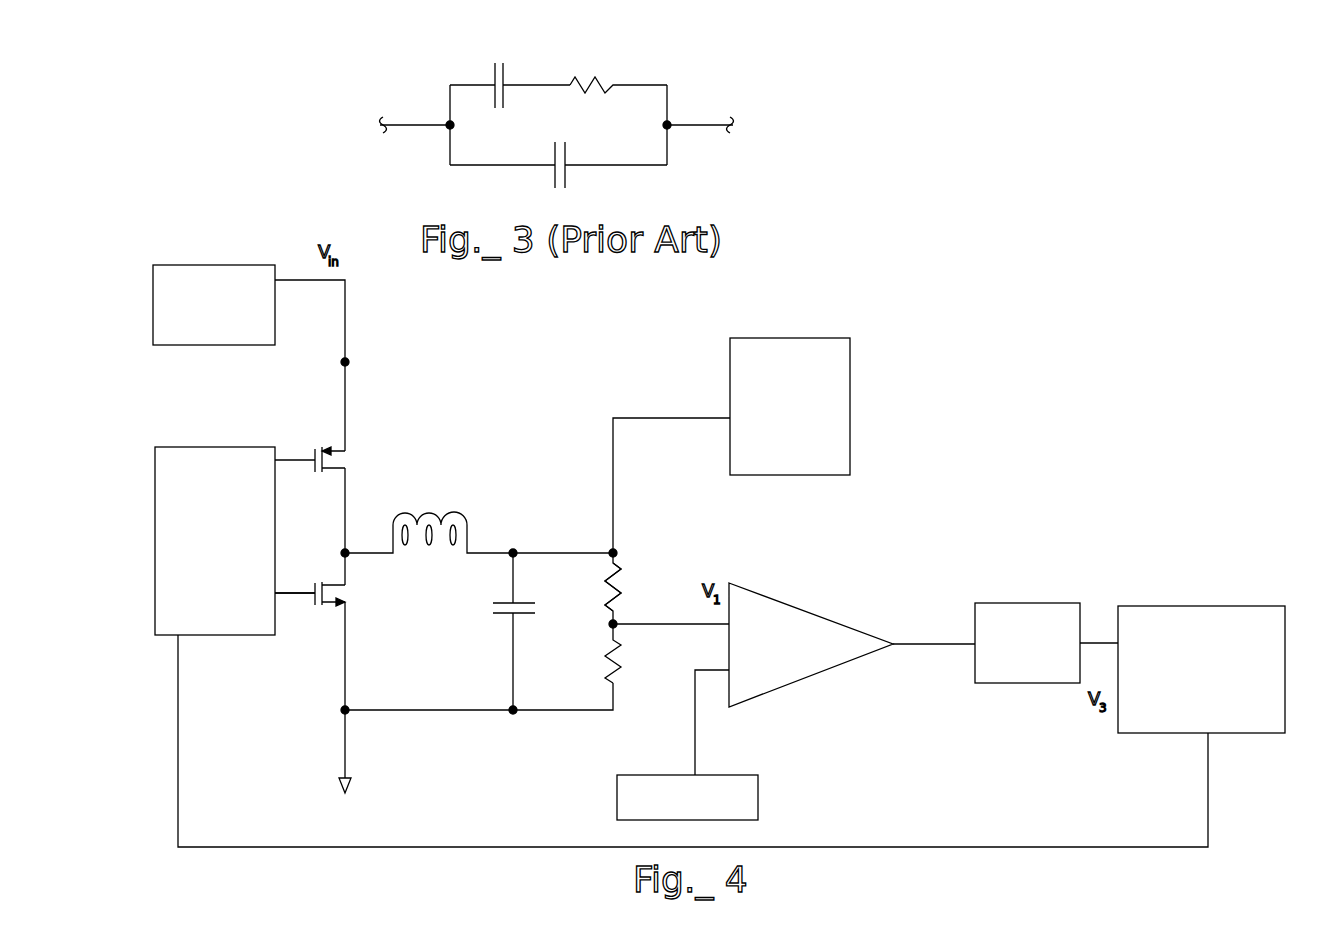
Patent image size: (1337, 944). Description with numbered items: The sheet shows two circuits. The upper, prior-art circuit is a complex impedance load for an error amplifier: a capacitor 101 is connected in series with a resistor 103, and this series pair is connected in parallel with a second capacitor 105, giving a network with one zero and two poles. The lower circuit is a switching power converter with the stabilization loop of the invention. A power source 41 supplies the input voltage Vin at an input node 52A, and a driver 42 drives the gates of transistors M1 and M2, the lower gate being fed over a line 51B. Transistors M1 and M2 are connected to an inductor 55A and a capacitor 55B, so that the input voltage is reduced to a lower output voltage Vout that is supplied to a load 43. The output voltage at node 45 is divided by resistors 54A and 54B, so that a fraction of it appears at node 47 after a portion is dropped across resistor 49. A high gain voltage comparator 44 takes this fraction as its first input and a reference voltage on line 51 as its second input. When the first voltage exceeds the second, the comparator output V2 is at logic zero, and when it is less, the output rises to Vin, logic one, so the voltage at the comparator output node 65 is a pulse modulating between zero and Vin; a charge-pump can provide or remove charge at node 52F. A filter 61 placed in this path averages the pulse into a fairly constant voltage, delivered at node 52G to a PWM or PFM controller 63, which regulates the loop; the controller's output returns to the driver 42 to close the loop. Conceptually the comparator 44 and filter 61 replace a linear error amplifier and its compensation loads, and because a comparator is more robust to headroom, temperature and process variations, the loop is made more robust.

In FIG. 3, the capacitor 101 is at (493, 85).
In FIG. 3, the resistor 103 is at (593, 86).
In FIG. 3, the capacitor 105 is at (570, 163).
In FIG. 4, the power source 41 is at (203, 265).
In FIG. 4, the driver 42 is at (210, 447).
In FIG. 4, the load 43 is at (790, 338).
In FIG. 4, the voltage comparator 44 is at (787, 601).
In FIG. 4, the node 45 is at (616, 545).
In FIG. 4, the node 47 is at (616, 629).
In FIG. 4, the resistor 49 is at (618, 588).
In FIG. 4, the line 51 is at (697, 730).
In FIG. 4, the driver gate line 51B is at (286, 593).
In FIG. 4, the input node 52A is at (345, 362).
In FIG. 4, the node 52F is at (915, 644).
In FIG. 4, the filter output line 52G is at (1088, 637).
In FIG. 4, the resistor 54A is at (618, 611).
In FIG. 4, the resistor 54B is at (619, 668).
In FIG. 4, the inductor 55A is at (437, 522).
In FIG. 4, the capacitor 55B is at (497, 600).
In FIG. 4, the filter 61 is at (997, 603).
In FIG. 4, the PWM or PFM controller 63 is at (1197, 606).
In FIG. 4, the comparator output node 65 is at (913, 644).
In FIG. 4, the transistor M1 is at (335, 463).
In FIG. 4, the transistor M2 is at (337, 593).